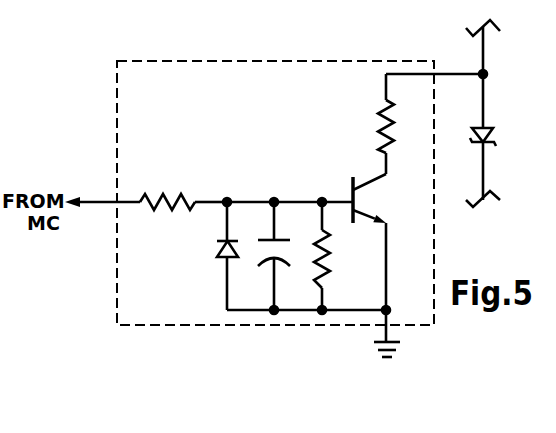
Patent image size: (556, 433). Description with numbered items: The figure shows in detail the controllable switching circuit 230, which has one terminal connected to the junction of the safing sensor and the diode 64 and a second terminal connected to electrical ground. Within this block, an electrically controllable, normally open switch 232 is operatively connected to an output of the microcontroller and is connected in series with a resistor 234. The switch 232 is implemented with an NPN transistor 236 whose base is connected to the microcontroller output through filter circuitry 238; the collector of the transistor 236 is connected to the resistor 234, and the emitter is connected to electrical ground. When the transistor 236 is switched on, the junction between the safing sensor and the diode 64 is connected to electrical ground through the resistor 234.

The controllable switching circuit 230 is at (240, 60).
The electrically controllable, normally open switch 232 is at (255, 177).
The resistor 234 is at (372, 119).
The NPN transistor 236 is at (380, 200).
The filter circuitry 238 is at (196, 272).
The diode 64 is at (496, 128).